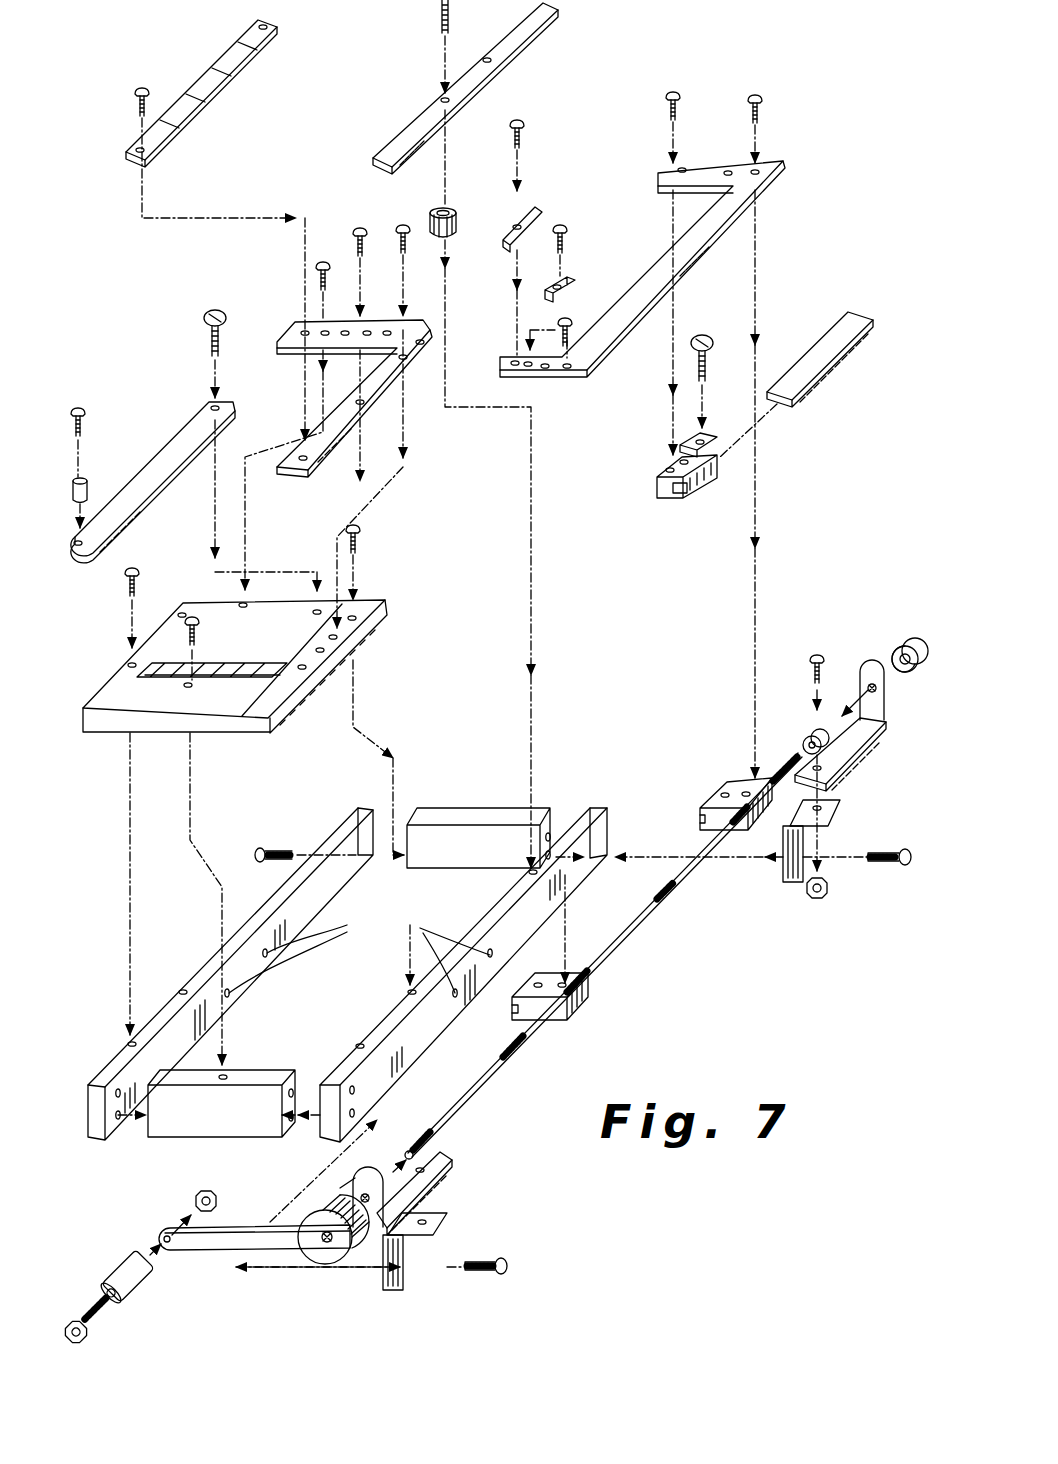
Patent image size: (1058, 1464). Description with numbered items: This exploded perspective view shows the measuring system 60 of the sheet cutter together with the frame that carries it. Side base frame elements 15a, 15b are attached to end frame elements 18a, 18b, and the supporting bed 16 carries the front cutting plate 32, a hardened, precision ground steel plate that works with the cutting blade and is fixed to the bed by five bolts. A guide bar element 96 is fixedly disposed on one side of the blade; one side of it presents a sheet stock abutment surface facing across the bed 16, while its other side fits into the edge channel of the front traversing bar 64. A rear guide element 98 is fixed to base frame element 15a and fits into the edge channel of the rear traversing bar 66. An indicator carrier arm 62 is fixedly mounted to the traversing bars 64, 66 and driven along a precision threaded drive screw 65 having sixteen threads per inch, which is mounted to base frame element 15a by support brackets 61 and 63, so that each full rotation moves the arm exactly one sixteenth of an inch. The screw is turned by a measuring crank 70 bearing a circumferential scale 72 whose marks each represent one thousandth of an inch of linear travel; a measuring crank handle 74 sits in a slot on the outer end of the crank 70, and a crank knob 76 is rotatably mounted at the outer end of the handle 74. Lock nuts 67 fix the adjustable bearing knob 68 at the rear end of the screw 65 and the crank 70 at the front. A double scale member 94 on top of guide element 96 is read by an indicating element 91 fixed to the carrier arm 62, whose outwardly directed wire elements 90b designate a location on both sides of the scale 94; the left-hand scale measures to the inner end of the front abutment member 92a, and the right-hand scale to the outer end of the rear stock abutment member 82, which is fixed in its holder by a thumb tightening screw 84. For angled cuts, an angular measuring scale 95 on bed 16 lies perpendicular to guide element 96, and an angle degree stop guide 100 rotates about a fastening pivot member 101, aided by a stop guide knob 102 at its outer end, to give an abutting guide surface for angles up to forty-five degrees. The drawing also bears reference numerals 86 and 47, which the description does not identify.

The double scale member 94 is at (195, 85).
The rear guide element 98 is at (518, 44).
The measuring system 60 is at (795, 128).
The indicator carrier arm 62 is at (693, 238).
The front abutment member 92a is at (535, 200).
The indicating element 91 is at (568, 278).
The wire elements 90b is at (543, 297).
The front cutting plate 32 is at (293, 330).
The guide bar element 96 is at (340, 422).
The fastening pivot member 101 is at (208, 340).
The angle degree stop guide 100 is at (155, 455).
The stop guide knob 102 is at (87, 483).
The thumb tightening screw 84 is at (706, 378).
The rear stock abutment member 82 is at (823, 352).
The block 86 is at (697, 483).
The adjustable bearing knob 68 is at (905, 643).
The support bracket 63 is at (865, 673).
The lock nuts 67 is at (806, 745).
The precision threaded drive screw 65 is at (783, 763).
The rear traversing bar 66 is at (715, 790).
The bed 16 is at (108, 722).
The angular measuring scale 95 is at (170, 673).
The end frame element 18a is at (490, 808).
The support bracket 61 is at (787, 880).
The side base frame element 15b is at (255, 978).
The side base frame element 15a is at (422, 1037).
The front traversing bar 64 is at (573, 1010).
The end frame element 18b is at (185, 1133).
The measuring crank 70 is at (330, 1212).
The circumferential scale 72 is at (342, 1186).
The measuring crank handle 74 is at (235, 1228).
The pivot pin 47 is at (327, 1243).
The crank knob 76 is at (123, 1258).